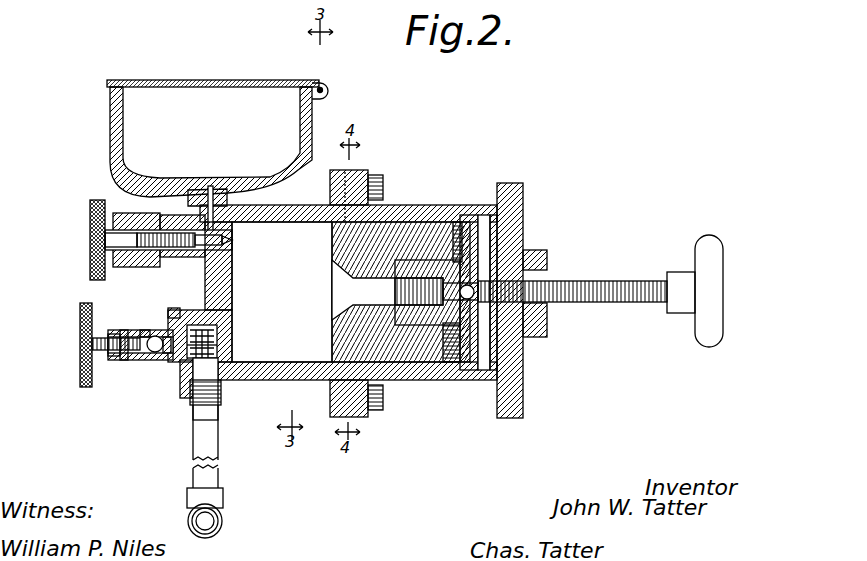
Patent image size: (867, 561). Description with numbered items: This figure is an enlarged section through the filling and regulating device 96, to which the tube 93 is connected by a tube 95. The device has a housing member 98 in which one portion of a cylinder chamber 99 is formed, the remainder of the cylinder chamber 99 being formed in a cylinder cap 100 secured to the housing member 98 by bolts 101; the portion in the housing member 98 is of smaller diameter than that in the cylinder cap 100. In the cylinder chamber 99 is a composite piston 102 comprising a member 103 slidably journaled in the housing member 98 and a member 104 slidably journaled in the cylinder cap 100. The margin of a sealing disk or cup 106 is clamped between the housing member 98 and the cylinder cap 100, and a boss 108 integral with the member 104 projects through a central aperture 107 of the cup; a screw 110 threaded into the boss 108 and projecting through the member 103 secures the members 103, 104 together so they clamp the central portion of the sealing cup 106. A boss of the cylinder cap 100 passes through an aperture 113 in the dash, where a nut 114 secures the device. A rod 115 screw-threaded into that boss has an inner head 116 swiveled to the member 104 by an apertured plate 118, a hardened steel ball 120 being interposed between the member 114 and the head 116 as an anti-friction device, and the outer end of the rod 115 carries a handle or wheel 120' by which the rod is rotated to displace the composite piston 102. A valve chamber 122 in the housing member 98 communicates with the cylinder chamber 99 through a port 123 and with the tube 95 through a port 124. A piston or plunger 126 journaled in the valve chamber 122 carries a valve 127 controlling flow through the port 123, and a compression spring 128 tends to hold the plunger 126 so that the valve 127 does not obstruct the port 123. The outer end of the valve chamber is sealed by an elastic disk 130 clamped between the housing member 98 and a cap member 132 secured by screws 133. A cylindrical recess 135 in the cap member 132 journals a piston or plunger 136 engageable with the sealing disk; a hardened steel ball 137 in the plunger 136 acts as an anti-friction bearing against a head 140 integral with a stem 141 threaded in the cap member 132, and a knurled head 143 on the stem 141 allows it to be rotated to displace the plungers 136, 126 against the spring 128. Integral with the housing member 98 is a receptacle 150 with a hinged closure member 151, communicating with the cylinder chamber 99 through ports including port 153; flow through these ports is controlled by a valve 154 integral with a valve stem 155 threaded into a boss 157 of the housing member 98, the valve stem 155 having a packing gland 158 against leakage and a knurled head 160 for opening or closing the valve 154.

The tube 93 is at (218, 515).
The tube 95 is at (200, 436).
The filling and regulating device 96 is at (358, 172).
The housing member 98 is at (297, 219).
The cylinder chamber 99 is at (260, 275).
The cylinder cap 100 is at (402, 230).
The bolts 101 is at (383, 179).
The composite piston 102 is at (452, 222).
The member 103 is at (381, 384).
The member 104 is at (471, 205).
The sealing disk or cup 106 is at (345, 388).
The central aperture 107 is at (473, 252).
The boss 108 is at (446, 327).
The screw 110 is at (340, 291).
The aperture 113 is at (540, 302).
The nut 114 is at (547, 257).
The rod 115 is at (587, 281).
The head 116 is at (476, 270).
The apertured plate 118 is at (547, 273).
The hardened steel ball 120 is at (441, 370).
The handle or wheel 120' is at (705, 277).
The valve chamber 122 is at (220, 287).
The port 123 is at (222, 328).
The port 124 is at (208, 370).
The piston or plunger 126 is at (187, 310).
The valve 127 is at (222, 306).
The compression spring 128 is at (220, 357).
The disk 130 is at (178, 368).
The cap member 132 is at (126, 328).
The screws 133 is at (190, 362).
The cylindrical recess 135 is at (147, 329).
The piston or plunger 136 is at (155, 355).
The hardened steel ball 137 is at (140, 362).
The head 140 is at (118, 324).
The stem 141 is at (92, 344).
The knurled head 143 is at (80, 333).
The receptacle 150 is at (117, 113).
The hinged closure member 151 is at (243, 68).
The port 153 is at (236, 237).
The valve 154 is at (233, 241).
The valve stem 155 is at (152, 228).
The boss 157 is at (184, 196).
The packing gland 158 is at (213, 193).
The knurled head 160 is at (90, 212).